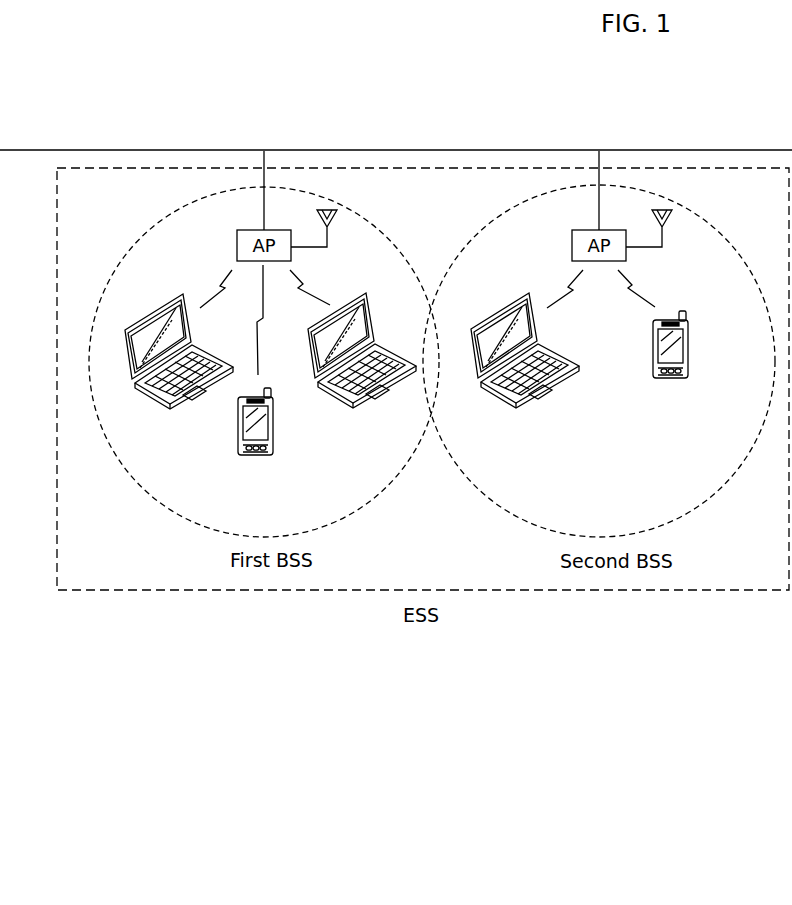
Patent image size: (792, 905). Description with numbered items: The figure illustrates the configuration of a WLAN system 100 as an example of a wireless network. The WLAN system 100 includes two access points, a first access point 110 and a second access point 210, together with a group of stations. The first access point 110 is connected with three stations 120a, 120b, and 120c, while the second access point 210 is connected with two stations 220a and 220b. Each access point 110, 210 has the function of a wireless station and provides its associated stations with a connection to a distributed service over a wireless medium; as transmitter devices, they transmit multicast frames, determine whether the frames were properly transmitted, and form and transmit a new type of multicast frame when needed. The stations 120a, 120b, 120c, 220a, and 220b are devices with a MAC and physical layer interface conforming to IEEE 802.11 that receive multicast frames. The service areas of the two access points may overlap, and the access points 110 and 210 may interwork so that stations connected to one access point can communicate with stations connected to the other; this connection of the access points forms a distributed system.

The WLAN system 100 is at (690, 148).
The access point 110 is at (237, 248).
The station 120a is at (157, 400).
The station 120b is at (254, 455).
The station 120c is at (340, 399).
The access point 210 is at (572, 248).
The station 220a is at (503, 399).
The station 220b is at (669, 378).